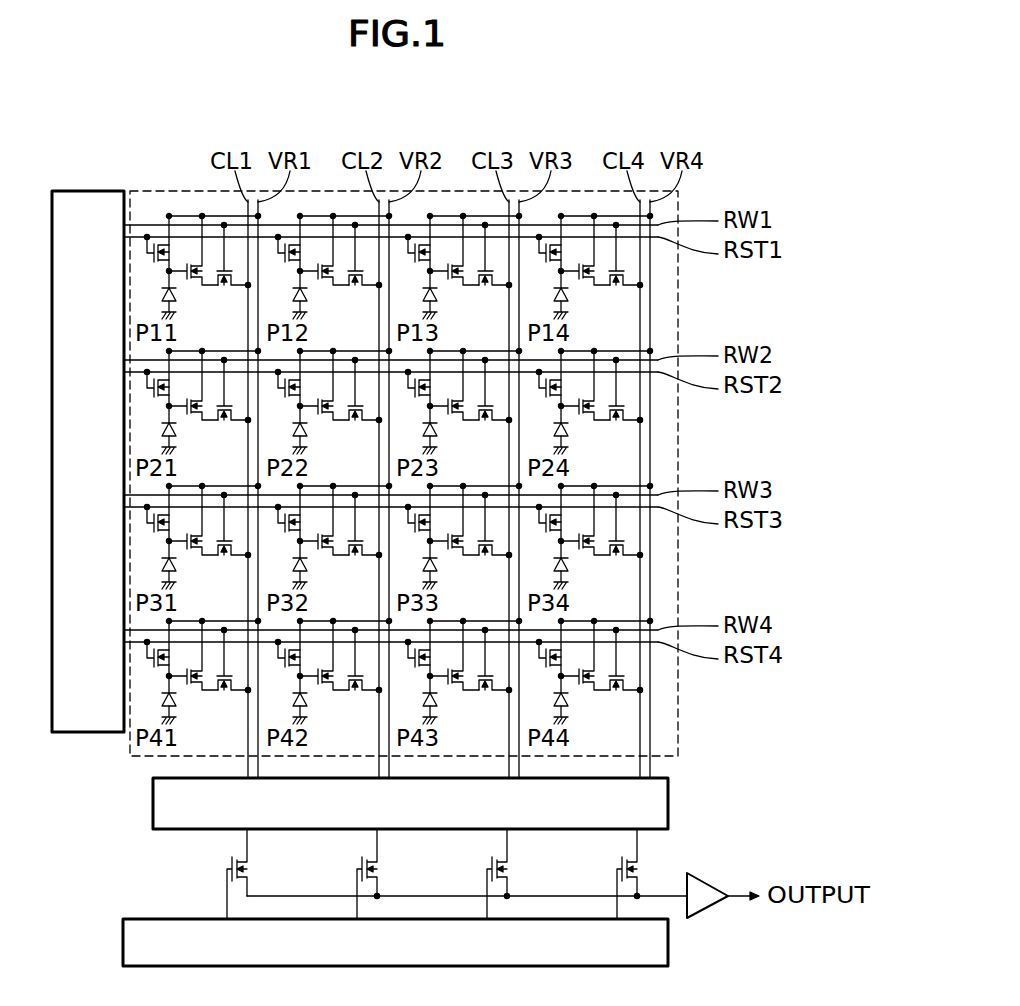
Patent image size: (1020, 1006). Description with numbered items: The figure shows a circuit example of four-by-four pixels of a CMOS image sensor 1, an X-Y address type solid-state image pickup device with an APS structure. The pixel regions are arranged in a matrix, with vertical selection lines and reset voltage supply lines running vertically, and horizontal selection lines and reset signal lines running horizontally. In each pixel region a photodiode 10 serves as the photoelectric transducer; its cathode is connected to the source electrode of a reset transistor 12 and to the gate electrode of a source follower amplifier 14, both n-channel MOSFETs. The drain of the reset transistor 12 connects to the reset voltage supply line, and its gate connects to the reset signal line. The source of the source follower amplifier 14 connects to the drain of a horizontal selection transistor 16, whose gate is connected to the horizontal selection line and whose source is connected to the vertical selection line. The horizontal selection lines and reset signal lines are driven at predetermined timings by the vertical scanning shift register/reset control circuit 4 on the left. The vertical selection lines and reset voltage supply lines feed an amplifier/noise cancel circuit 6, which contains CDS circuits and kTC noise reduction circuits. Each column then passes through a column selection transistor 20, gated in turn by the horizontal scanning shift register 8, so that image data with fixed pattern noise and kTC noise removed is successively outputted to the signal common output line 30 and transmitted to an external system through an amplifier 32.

The CMOS image sensor 1 is at (586, 132).
The vertical scanning shift register/reset control circuit 4 is at (86, 183).
The amplifier/noise cancel circuit 6 is at (660, 800).
The horizontal scanning shift register 8 is at (115, 935).
The photodiode 10 is at (169, 288).
The reset transistor 12 is at (150, 251).
The source follower amplifier 14 is at (184, 270).
The horizontal selection transistor 16 is at (220, 276).
The column selection transistor 20 is at (243, 861).
The signal common output line 30 is at (666, 890).
The amplifier 32 is at (707, 895).